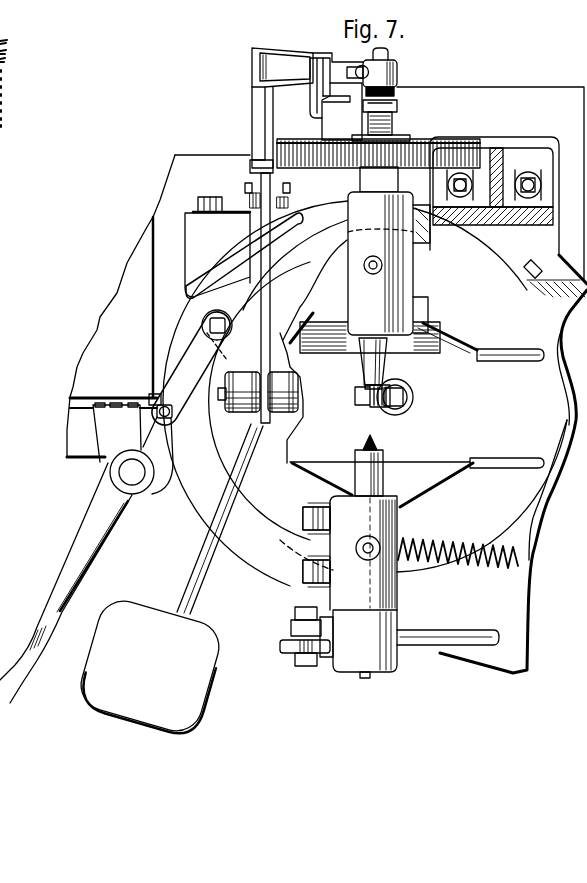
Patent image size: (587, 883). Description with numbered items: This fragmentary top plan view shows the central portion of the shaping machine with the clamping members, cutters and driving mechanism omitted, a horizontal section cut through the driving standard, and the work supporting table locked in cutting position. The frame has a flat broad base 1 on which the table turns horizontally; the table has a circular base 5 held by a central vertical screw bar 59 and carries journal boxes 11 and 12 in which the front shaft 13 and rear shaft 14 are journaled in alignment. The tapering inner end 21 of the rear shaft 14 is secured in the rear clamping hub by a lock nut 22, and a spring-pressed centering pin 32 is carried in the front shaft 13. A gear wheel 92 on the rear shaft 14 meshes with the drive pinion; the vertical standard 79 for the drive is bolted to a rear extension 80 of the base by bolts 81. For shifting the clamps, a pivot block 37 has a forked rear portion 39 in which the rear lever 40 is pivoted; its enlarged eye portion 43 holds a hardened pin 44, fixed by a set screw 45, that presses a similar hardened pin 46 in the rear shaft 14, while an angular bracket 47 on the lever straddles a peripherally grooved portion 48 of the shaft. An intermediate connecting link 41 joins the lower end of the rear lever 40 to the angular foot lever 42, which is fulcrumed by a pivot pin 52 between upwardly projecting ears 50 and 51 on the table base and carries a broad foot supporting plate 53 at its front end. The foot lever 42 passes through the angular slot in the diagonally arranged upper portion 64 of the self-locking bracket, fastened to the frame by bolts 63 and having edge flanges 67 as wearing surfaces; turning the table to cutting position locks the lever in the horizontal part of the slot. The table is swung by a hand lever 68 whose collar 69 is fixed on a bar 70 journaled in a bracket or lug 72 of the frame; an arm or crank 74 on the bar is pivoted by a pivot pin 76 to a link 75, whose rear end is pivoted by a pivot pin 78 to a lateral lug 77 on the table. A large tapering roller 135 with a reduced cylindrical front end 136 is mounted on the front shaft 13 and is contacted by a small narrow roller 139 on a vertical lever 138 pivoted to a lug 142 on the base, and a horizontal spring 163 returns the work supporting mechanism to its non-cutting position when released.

The base 1 is at (476, 628).
The circular base 5 is at (317, 370).
The front journal box 11 is at (350, 553).
The rear journal box 12 is at (389, 251).
The front shaft 13 is at (363, 458).
The rear shaft 14 is at (364, 350).
The tapering inner end 21 is at (372, 372).
The lock nut 22 is at (362, 398).
The centering pin 32 is at (377, 445).
The pivot block 37 is at (342, 111).
The bifurcated rear portion 39 is at (318, 60).
The rear lever 40 is at (282, 67).
The intermediate connecting link 41 is at (271, 121).
The angular foot lever 42 is at (195, 568).
The enlarged eye portion 43 is at (398, 70).
The hardened pin 44 is at (390, 54).
The set screw 45 is at (366, 68).
The hardened pin 46 is at (393, 93).
The angular bracket 47 is at (397, 106).
The peripherally grooved portion 48 is at (394, 119).
The ear 50 is at (243, 378).
The ear 51 is at (288, 380).
The pivot pin 52 is at (221, 396).
The foot supporting plate 53 is at (150, 667).
The vertical screw bar 59 is at (404, 394).
The bolts 63 is at (206, 199).
The lever bar 64 is at (222, 272).
The edge flanges 67 is at (263, 273).
The hand lever 68 is at (72, 568).
The collar 69 is at (116, 473).
The bar 70 is at (132, 472).
The bracket or lug 72 is at (117, 433).
The arm or crank 74 is at (158, 449).
The link 75 is at (191, 368).
The pivot pin 76 is at (156, 397).
The lateral lug 77 is at (206, 318).
The pivot pin 78 is at (210, 327).
The vertical standard 79 is at (501, 149).
The rear extension 80 is at (543, 144).
The bolts 81 is at (528, 183).
The gear wheel 92 is at (448, 146).
The large tapering roller 135 is at (402, 628).
The reduced front end 136 is at (346, 673).
The vertical lever 138 is at (297, 637).
The small narrow roller 139 is at (290, 651).
The lug 142 is at (297, 619).
The spring 163 is at (432, 550).